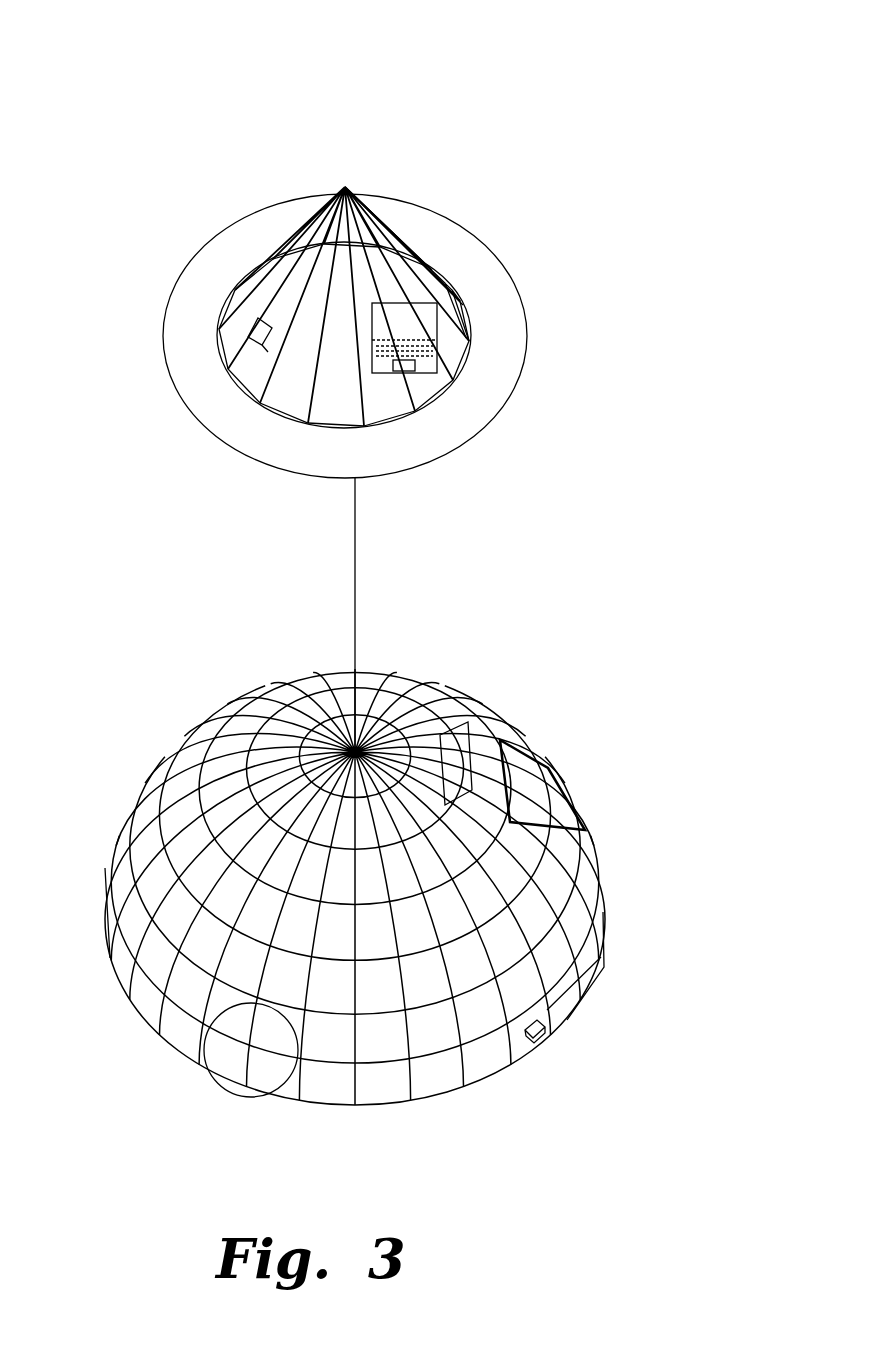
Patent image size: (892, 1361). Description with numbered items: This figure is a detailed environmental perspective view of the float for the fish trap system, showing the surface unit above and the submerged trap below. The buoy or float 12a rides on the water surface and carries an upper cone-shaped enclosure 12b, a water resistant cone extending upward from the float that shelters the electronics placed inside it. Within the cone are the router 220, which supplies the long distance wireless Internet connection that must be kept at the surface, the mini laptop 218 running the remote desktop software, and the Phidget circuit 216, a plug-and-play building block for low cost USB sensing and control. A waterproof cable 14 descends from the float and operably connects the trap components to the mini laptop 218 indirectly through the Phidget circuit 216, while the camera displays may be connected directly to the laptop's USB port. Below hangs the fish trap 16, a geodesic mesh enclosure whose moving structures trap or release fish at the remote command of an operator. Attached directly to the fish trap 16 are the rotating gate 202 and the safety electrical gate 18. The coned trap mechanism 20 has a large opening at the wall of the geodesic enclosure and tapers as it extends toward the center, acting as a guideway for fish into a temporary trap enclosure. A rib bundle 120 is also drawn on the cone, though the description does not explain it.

The buoy or float 12a is at (300, 176).
The upper cone-shaped enclosure 12b is at (360, 195).
The Phidget circuit 216 is at (245, 263).
The router 220 is at (385, 221).
The rib bundle 120 is at (430, 258).
The mini laptop 218 is at (438, 322).
The waterproof cable 14 is at (356, 578).
The rotating gate 202 is at (497, 700).
The fish trap 16 is at (583, 821).
The safety electrical gate 18 is at (580, 1010).
The coned trap mechanism 20 is at (205, 1085).